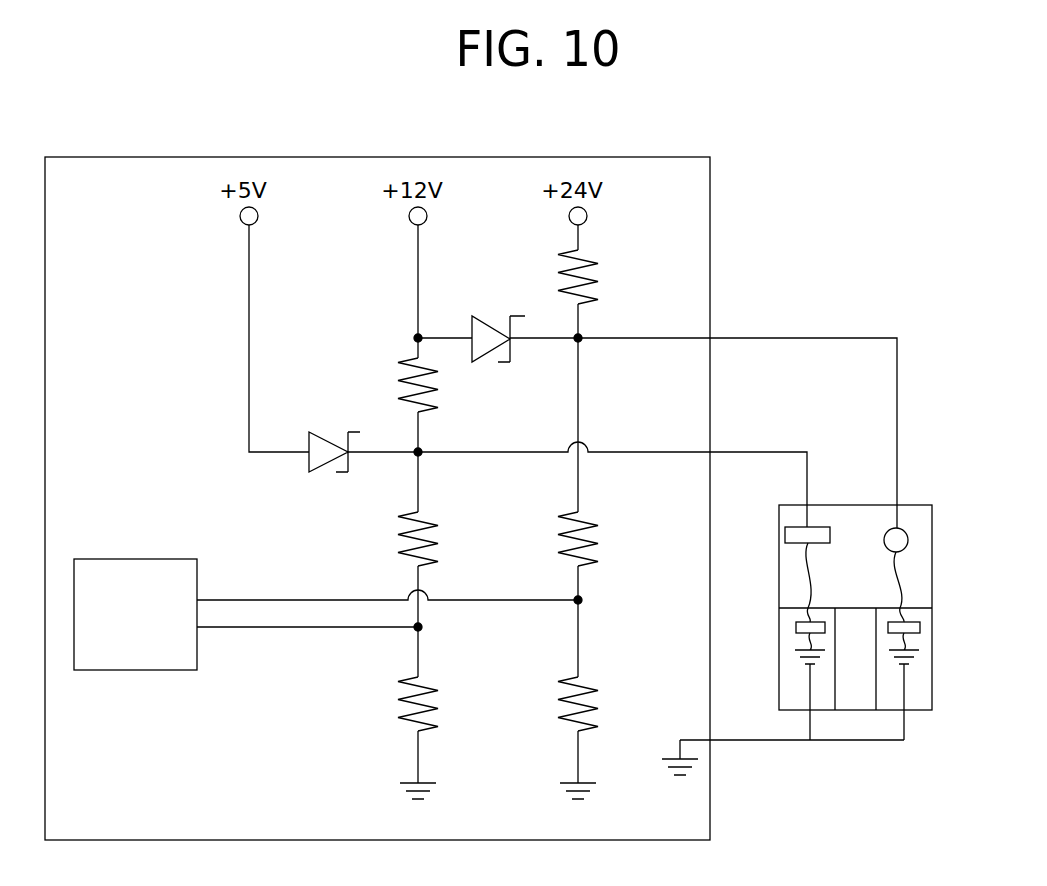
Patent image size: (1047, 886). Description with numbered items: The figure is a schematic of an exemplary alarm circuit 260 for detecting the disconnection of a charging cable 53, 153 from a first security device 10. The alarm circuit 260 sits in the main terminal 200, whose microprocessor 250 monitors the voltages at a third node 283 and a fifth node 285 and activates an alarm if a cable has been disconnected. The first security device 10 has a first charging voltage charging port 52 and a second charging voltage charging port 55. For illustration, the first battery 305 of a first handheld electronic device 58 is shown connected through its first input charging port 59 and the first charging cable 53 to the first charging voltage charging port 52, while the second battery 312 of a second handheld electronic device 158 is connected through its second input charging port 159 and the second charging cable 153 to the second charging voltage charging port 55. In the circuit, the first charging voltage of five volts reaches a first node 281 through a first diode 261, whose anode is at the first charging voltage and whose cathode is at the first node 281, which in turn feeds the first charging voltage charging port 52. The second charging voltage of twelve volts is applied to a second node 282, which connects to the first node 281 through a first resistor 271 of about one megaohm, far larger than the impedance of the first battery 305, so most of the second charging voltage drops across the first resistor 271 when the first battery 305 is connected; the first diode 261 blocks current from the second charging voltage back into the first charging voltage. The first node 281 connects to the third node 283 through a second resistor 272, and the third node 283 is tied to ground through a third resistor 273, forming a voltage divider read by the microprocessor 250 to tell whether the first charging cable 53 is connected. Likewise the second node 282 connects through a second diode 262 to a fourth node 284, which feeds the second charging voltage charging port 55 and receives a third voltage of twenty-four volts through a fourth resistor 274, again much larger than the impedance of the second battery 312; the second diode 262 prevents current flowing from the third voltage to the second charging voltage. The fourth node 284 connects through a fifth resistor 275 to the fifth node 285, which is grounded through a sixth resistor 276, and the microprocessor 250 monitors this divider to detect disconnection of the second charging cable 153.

The first security device 10 is at (937, 545).
The first charging voltage charging port 52 is at (818, 527).
The first charging cable 53 is at (815, 585).
The second charging voltage charging port 55 is at (911, 528).
The first handheld electronic device 58 is at (793, 652).
The first input charging port 59 is at (792, 626).
The second charging cable 153 is at (915, 580).
The second handheld electronic device 158 is at (935, 658).
The second input charging port 159 is at (925, 622).
The main terminal 200 is at (343, 157).
The microprocessor 250 is at (100, 559).
The alarm circuit 260 is at (185, 383).
The first diode (D1) 261 is at (318, 470).
The second diode (D2) 262 is at (480, 352).
The first resistor (R1) 271 is at (400, 362).
The second resistor (R2) 272 is at (400, 540).
The third resistor (R3) 273 is at (400, 696).
The fourth resistor (R4) 274 is at (562, 260).
The fifth resistor (R5) 275 is at (565, 516).
The sixth resistor (R6) 276 is at (562, 681).
The first node 281 is at (416, 456).
The second node 282 is at (416, 336).
The third node 283 is at (421, 628).
The fourth node 284 is at (581, 340).
The fifth node 285 is at (581, 602).
The first battery 305 is at (795, 672).
The second battery 312 is at (915, 672).